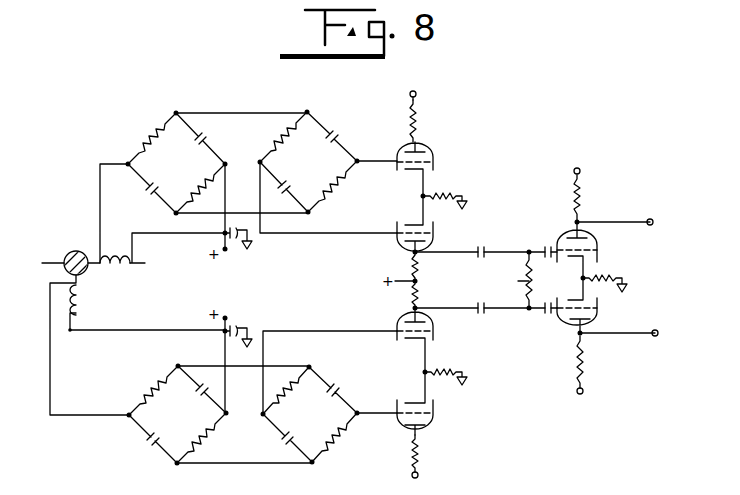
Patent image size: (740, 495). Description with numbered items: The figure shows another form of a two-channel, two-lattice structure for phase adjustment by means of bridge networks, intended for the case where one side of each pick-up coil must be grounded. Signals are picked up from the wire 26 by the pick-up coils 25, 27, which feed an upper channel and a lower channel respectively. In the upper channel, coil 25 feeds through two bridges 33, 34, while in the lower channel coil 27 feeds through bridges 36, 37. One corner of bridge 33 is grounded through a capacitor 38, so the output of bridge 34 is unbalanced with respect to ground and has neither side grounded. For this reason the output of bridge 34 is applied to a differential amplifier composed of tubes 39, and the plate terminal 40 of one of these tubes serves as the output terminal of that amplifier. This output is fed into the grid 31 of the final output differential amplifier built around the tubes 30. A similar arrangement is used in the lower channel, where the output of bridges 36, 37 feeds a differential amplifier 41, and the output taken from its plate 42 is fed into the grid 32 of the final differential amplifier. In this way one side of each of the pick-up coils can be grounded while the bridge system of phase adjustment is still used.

The pick-up coil 25 is at (127, 273).
The wire 26 is at (75, 251).
The pick-up coil 27 is at (84, 302).
The tubes 30 is at (596, 281).
The grid 31 is at (562, 240).
The grid 32 is at (566, 322).
The bridge 33 is at (175, 130).
The bridge 34 is at (310, 128).
The bridge 36 is at (175, 443).
The bridge 37 is at (320, 421).
The capacitor 38 is at (239, 243).
The tubes 39 is at (437, 227).
The plate terminal 40 is at (425, 257).
The differential amplifier 41 is at (437, 402).
The plate 42 is at (427, 312).